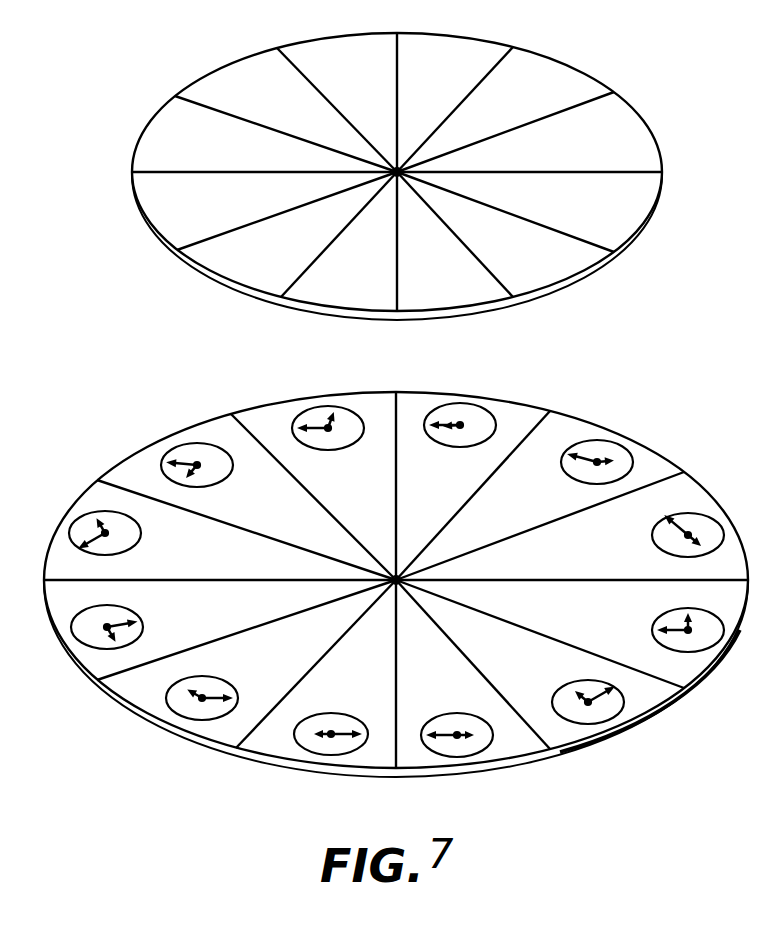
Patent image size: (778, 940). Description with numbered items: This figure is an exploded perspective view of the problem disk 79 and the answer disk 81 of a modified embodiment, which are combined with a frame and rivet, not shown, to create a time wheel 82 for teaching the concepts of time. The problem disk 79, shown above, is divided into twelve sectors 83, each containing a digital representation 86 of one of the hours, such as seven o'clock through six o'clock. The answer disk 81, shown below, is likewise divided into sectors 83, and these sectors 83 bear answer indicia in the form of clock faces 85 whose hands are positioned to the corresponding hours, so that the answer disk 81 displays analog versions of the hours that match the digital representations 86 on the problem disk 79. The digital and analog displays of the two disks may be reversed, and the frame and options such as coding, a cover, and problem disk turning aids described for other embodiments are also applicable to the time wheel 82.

The problem disk 79 is at (606, 78).
The answer disk 81 is at (458, 777).
The time wheel 82 is at (130, 354).
The sectors 83 is at (396, 400).
The clock faces 85 is at (168, 713).
The digital representations 86 is at (645, 206).